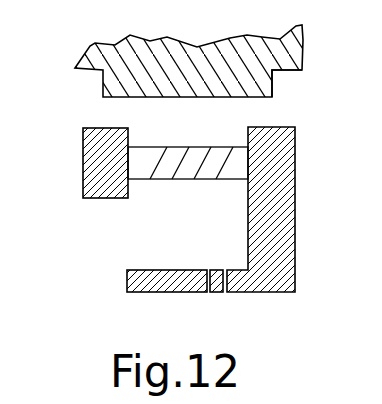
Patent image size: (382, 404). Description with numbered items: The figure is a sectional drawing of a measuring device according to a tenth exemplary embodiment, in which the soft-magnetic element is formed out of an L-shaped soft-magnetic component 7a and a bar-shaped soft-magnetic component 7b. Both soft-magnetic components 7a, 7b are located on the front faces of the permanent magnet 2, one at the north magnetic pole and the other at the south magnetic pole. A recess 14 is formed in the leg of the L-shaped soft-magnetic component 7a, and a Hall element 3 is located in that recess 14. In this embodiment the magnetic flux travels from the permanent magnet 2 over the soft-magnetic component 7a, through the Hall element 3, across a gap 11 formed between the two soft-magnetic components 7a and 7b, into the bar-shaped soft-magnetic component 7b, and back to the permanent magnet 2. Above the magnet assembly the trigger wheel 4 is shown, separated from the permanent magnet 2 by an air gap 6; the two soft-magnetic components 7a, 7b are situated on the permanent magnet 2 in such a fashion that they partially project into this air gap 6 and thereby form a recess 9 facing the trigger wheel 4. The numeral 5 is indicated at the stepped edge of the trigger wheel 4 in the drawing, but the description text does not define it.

The permanent magnet 2 is at (152, 179).
The Hall element 3 is at (218, 293).
The trigger wheel 4 is at (309, 55).
The step edge of armature 5 is at (272, 78).
The air gap 6 is at (149, 121).
The soft-magnetic component 7a is at (287, 192).
The soft-magnetic component 7b is at (83, 152).
The recess 9 is at (128, 133).
The gap 11 is at (207, 301).
The recess 14 is at (139, 246).